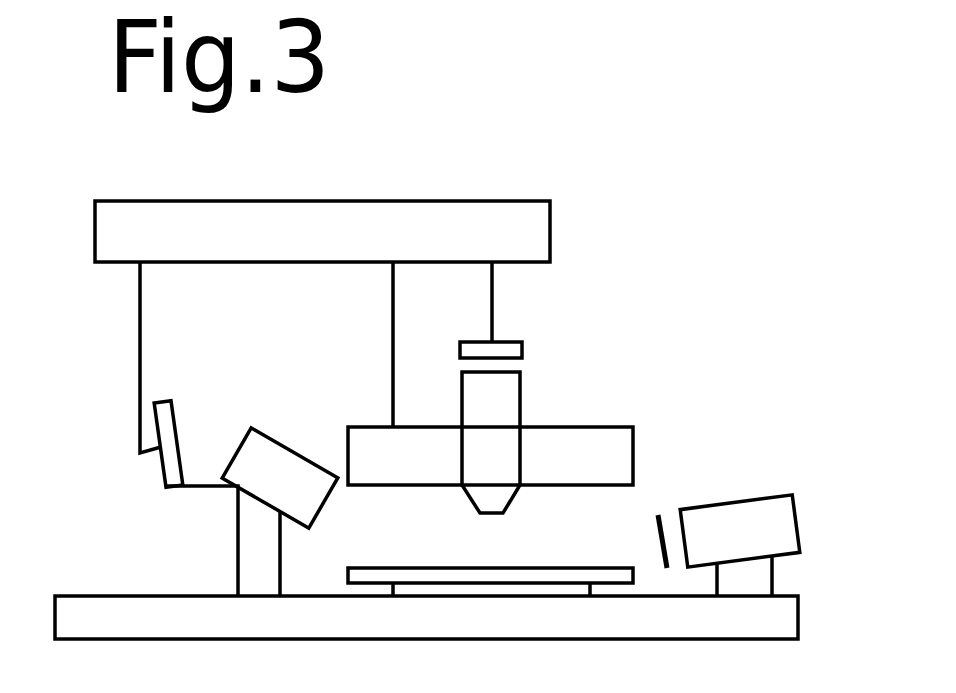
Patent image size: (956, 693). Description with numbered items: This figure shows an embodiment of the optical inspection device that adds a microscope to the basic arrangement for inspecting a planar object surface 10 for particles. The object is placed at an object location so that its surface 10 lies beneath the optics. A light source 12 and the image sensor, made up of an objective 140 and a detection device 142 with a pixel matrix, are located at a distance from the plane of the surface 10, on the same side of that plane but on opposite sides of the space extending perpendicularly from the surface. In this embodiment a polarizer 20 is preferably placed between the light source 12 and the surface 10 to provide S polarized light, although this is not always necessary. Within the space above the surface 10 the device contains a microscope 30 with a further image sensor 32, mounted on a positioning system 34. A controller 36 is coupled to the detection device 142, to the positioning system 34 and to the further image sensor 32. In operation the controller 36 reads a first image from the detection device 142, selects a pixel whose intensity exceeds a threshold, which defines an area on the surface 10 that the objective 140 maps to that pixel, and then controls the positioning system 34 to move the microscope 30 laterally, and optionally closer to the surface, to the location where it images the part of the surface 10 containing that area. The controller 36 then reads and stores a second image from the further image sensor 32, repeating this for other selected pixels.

The object surface 10 is at (404, 568).
The light source 12 is at (757, 497).
The polarizer 20 is at (657, 540).
The microscope 30 is at (521, 402).
The further image sensor 32 is at (522, 345).
The positioning system 34 is at (633, 447).
The controller 36 is at (550, 228).
The objective 140 is at (293, 450).
The detection device 142 is at (156, 432).